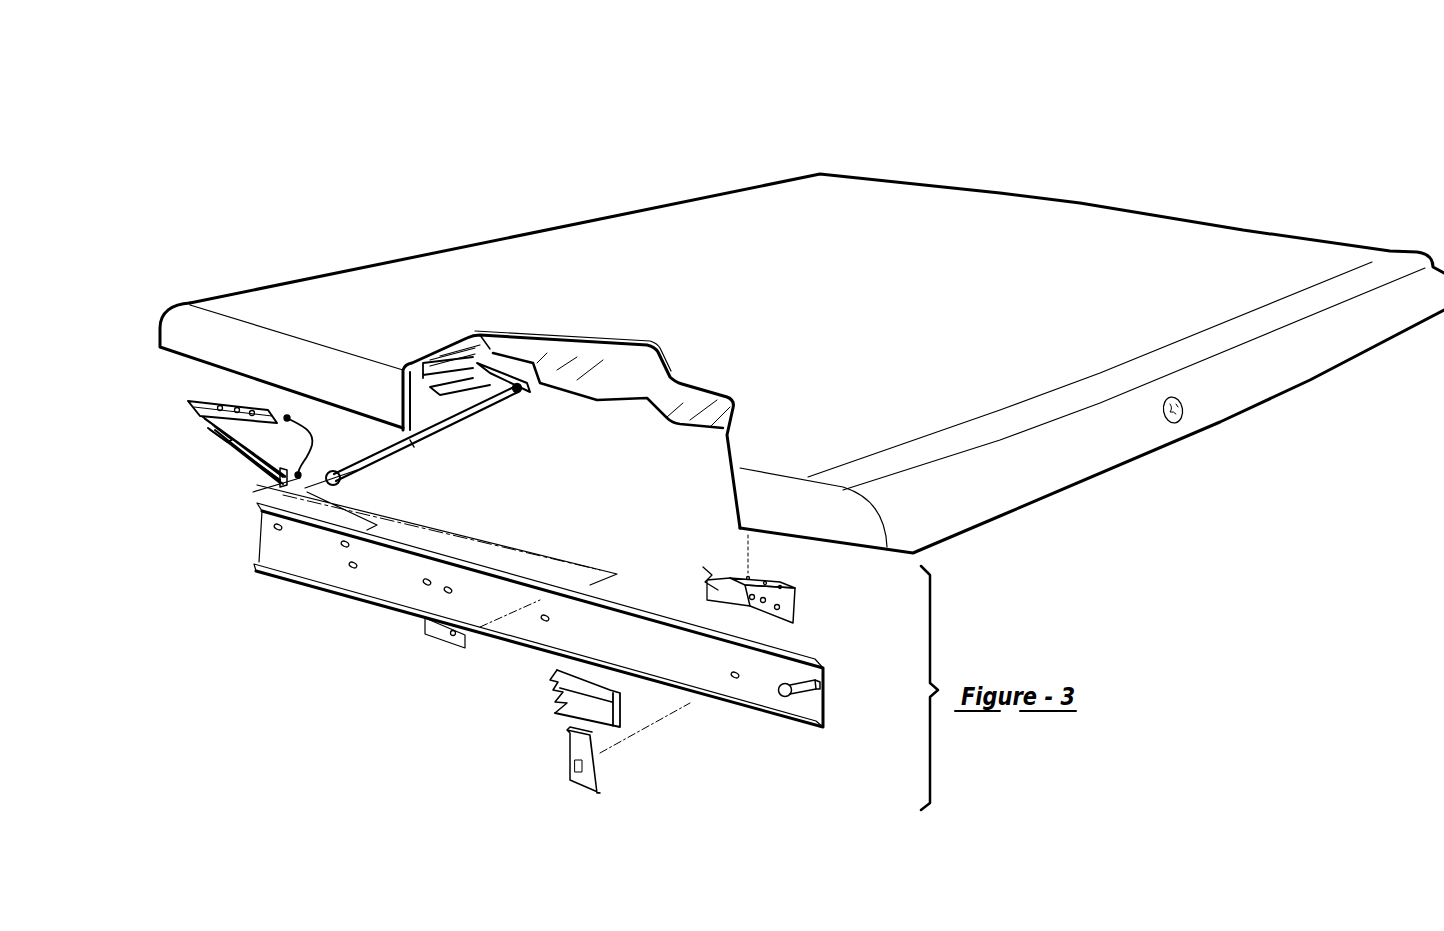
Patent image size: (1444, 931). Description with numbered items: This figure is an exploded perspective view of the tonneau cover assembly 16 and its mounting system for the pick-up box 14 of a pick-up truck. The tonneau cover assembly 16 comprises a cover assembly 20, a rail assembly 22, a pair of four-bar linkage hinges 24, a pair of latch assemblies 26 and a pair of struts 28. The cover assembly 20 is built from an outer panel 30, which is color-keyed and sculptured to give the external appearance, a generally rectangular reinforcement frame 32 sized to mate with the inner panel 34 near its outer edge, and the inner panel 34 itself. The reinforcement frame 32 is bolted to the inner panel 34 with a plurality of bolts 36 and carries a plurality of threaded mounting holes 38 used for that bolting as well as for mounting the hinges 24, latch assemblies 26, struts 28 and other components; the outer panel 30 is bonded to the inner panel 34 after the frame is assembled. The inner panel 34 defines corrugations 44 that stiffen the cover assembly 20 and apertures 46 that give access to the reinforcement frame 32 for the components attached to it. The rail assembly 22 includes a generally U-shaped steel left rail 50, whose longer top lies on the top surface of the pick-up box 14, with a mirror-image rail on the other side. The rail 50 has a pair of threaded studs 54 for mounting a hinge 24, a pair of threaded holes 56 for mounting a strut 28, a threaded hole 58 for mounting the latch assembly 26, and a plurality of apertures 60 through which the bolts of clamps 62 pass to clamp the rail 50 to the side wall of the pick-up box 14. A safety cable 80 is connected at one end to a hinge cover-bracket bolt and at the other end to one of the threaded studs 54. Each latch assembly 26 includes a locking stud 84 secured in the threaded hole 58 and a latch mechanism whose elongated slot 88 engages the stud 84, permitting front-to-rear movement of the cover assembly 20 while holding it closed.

The pick-up box 14 is at (553, 690).
The tonneau cover assembly 16 is at (1045, 137).
The cover assembly 20 is at (1143, 243).
The rail assembly 22 is at (402, 595).
The four-bar linkage hinge 24 is at (250, 452).
The latch assembly 26 is at (797, 596).
The strut 28 is at (413, 432).
The outer panel 30 is at (1038, 303).
The reinforcement frame 32 is at (450, 362).
The inner panel 34 is at (615, 400).
The bolt 36 is at (418, 398).
The threaded mounting hole 38 is at (455, 361).
The corrugation 44 is at (683, 377).
The aperture 46 is at (473, 395).
The left rail 50 is at (527, 623).
The threaded stud 54 is at (274, 527).
The threaded hole 56 is at (428, 580).
The threaded hole 58 is at (784, 696).
The aperture 60 is at (353, 567).
The clamp 62 is at (580, 778).
The safety cable 80 is at (312, 445).
The locking stud 84 is at (821, 687).
The elongated slot 88 is at (1182, 408).